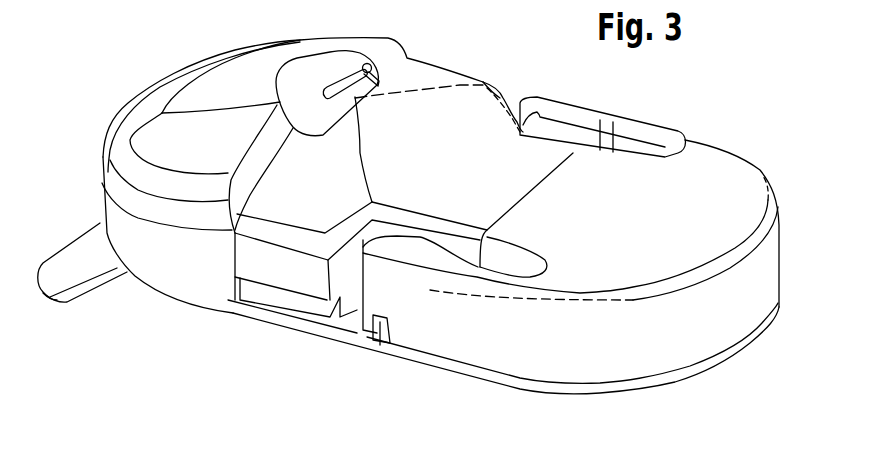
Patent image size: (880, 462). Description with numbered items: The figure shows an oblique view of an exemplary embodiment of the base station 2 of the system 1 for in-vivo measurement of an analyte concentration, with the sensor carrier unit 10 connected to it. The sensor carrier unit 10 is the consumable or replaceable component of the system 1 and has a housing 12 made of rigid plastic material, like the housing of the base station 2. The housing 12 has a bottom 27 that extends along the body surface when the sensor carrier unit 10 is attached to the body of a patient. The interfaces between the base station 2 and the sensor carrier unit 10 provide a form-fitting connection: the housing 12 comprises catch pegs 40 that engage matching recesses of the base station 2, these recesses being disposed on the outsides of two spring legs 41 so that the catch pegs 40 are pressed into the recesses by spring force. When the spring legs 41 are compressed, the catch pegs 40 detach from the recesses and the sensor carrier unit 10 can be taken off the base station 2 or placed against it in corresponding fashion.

The system 1 is at (170, 62).
The base station 2 is at (692, 131).
The sensor carrier unit 10 is at (181, 309).
The housing 12 is at (170, 277).
The bottom 27 is at (260, 313).
The catch pegs 40 is at (380, 347).
The spring legs 41 is at (387, 283).